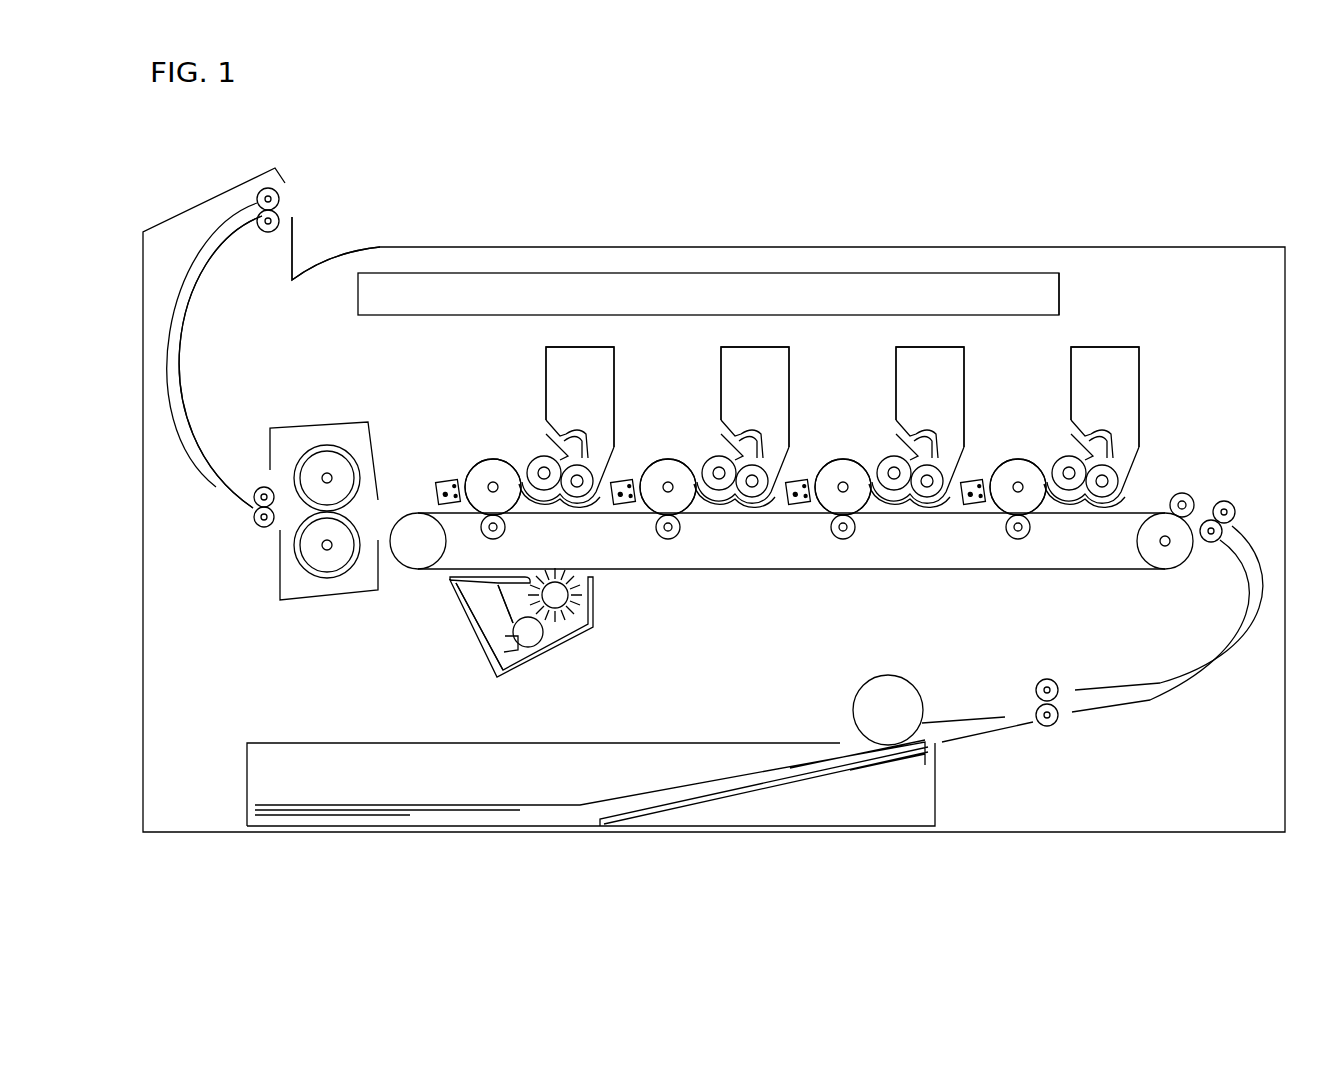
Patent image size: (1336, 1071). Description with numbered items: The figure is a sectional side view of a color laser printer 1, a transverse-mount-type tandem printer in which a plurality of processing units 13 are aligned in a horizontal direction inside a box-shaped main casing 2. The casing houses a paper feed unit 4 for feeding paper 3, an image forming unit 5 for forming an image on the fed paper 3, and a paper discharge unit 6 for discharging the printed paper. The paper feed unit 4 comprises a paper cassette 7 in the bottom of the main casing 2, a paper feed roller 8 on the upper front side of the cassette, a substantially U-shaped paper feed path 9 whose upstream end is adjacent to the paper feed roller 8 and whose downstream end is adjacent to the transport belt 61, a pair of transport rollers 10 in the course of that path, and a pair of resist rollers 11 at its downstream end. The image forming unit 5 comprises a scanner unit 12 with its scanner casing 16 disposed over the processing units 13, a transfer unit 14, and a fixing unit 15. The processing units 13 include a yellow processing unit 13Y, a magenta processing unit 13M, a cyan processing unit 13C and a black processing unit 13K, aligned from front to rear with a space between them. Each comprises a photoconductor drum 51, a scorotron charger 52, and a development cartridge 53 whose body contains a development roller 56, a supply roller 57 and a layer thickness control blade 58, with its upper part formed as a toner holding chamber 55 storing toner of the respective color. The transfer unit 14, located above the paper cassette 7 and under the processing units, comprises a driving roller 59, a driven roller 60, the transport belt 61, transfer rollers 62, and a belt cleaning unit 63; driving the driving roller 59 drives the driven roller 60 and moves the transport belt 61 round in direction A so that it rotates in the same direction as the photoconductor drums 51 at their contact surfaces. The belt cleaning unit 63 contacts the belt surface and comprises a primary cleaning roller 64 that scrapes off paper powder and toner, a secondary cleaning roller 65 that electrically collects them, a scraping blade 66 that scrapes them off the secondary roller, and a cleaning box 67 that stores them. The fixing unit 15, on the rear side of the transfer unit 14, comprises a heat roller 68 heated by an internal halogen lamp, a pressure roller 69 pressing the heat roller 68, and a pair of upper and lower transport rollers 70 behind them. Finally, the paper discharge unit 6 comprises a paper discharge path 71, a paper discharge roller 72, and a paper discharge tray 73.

The color laser printer 1 is at (576, 170).
The main casing 2 is at (1285, 382).
The paper 3 is at (505, 803).
The paper feed unit 4 is at (1253, 716).
The image forming unit 5 is at (1148, 362).
The paper discharge unit 6 is at (196, 240).
The paper cassette 7 is at (302, 742).
The paper feed roller 8 is at (855, 705).
The paper feed path 9 is at (1168, 696).
The transport rollers 10 is at (1059, 694).
The resist rollers 11 is at (1222, 528).
The scanner unit 12 is at (831, 262).
The processing units 13 is at (777, 413).
The black processing unit 13K is at (485, 368).
The cyan processing unit 13C is at (669, 368).
The magenta processing unit 13M is at (847, 368).
The yellow processing unit 13Y is at (1023, 368).
The transfer unit 14 is at (1125, 580).
The fixing unit 15 is at (321, 416).
The scanner casing 16 is at (1060, 292).
The photoconductor drum 51 is at (478, 468).
The scorotron charger 52 is at (440, 480).
The development cartridge 53 is at (863, 329).
The toner holding chamber 55 is at (556, 350).
The development roller 56 is at (533, 460).
The supply roller 57 is at (582, 497).
The layer thickness control blade 58 is at (548, 445).
The driving roller 59 is at (418, 560).
The driven roller 60 is at (1168, 552).
The transport belt 61 is at (930, 572).
The transfer rollers 62 is at (488, 540).
The belt cleaning unit 63 is at (494, 690).
The primary cleaning roller 64 is at (558, 612).
The secondary cleaning roller 65 is at (530, 648).
The scraping blade 66 is at (500, 660).
The cleaning box 67 is at (483, 622).
The heat roller 68 is at (312, 470).
The pressure roller 69 is at (310, 545).
The transport rollers 70 is at (257, 514).
The paper discharge path 71 is at (178, 364).
The paper discharge roller 72 is at (280, 212).
The paper discharge tray 73 is at (403, 246).